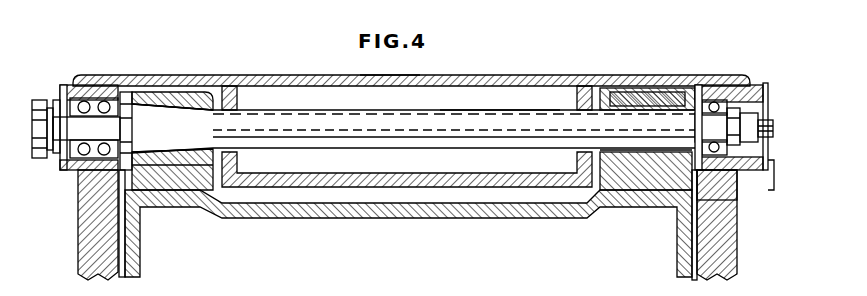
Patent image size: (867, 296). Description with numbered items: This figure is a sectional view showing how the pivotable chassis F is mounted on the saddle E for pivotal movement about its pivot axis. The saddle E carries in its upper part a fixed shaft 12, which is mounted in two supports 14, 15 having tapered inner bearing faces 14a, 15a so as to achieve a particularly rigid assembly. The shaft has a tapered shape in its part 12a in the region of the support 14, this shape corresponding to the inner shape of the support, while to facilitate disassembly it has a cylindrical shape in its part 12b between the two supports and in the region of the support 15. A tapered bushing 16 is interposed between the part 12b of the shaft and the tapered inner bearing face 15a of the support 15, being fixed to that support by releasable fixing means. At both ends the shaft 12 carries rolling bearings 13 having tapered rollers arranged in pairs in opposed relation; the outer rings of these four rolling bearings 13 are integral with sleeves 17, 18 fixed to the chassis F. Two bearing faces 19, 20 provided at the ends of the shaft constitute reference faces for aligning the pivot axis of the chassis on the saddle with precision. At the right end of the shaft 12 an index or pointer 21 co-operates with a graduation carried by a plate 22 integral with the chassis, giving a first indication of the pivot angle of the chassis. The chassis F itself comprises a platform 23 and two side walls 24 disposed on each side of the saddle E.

The fixed shaft 12 is at (317, 109).
The tapered part of the shaft 12a is at (227, 107).
The cylindrical part of the shaft 12b is at (505, 127).
The rolling bearings 13 is at (111, 98).
The support 14 is at (158, 93).
The tapered inner bearing face 14a is at (182, 131).
The support 15 is at (643, 93).
The tapered inner bearing face 15a is at (597, 90).
The tapered bushing 16 is at (660, 95).
The sleeve 17 is at (77, 99).
The sleeve 18 is at (733, 84).
The bearing face 19 is at (52, 107).
The bearing face 20 is at (755, 112).
The index or pointer 21 is at (773, 172).
The plate 22 is at (699, 174).
The platform 23 is at (387, 75).
The side walls 24 is at (97, 233).
The saddle E is at (430, 218).
The chassis F is at (447, 74).